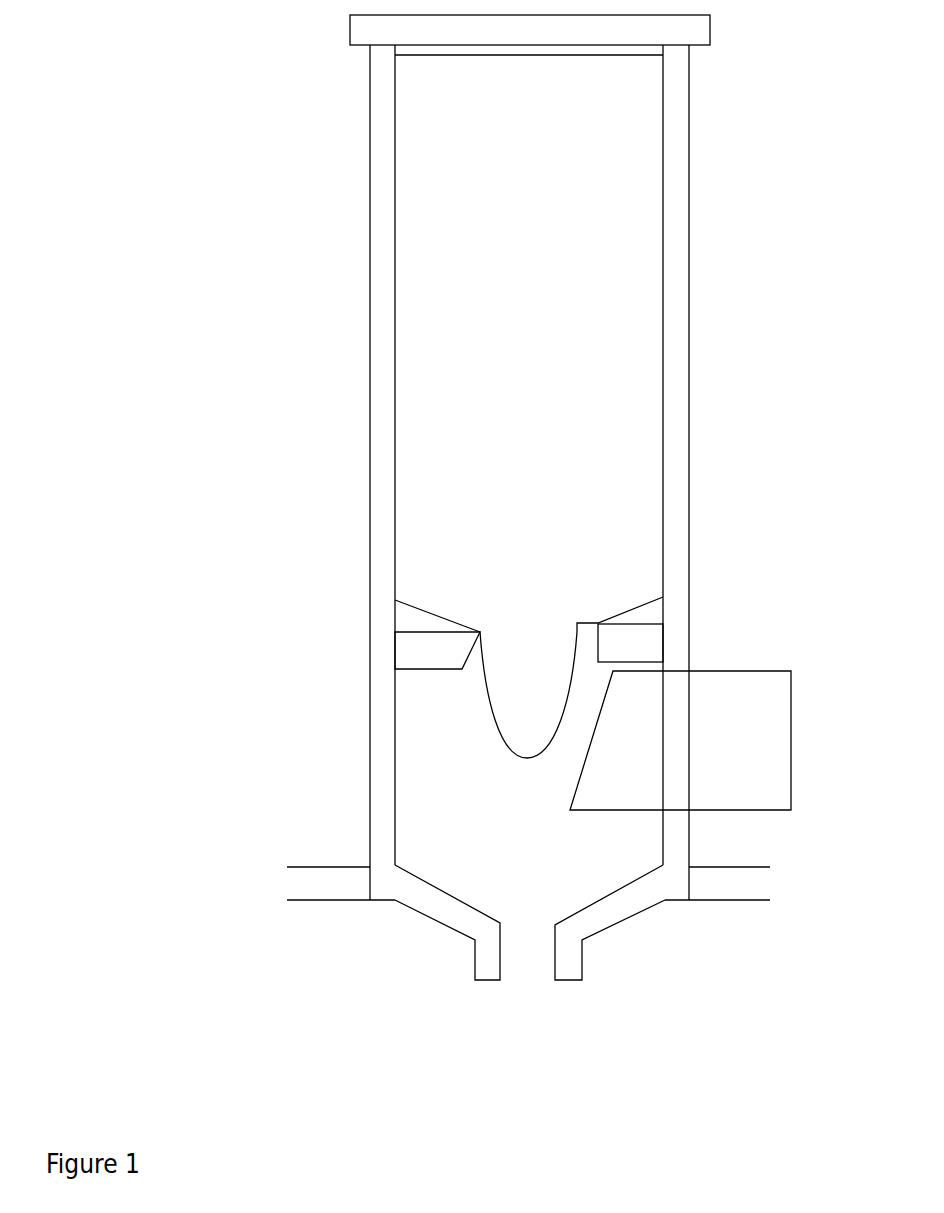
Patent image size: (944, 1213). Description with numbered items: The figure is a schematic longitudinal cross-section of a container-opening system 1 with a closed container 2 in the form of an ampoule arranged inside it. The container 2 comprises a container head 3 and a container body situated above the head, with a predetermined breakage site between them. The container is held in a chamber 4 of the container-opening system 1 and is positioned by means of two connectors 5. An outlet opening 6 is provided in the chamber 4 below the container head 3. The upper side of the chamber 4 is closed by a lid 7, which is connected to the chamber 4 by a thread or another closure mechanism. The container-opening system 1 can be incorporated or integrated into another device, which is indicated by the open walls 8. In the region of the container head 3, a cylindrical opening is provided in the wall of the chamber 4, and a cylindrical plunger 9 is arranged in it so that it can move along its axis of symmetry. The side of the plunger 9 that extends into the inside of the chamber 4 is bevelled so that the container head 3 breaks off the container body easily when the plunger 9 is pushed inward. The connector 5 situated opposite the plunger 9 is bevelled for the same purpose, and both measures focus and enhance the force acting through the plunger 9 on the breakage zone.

The container-opening system 1 is at (550, 526).
The container 2 is at (589, 264).
The container head 3 is at (515, 678).
The chamber 4 is at (370, 344).
The connectors 5 is at (423, 651).
The outlet opening 6 is at (505, 972).
The lid 7 is at (490, 34).
The open walls 8 is at (324, 878).
The plunger 9 is at (697, 713).